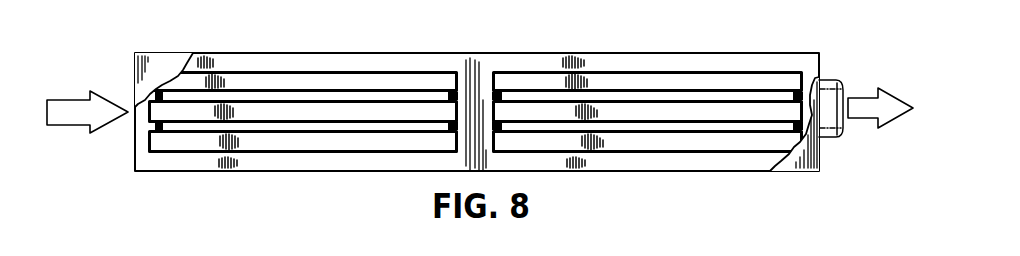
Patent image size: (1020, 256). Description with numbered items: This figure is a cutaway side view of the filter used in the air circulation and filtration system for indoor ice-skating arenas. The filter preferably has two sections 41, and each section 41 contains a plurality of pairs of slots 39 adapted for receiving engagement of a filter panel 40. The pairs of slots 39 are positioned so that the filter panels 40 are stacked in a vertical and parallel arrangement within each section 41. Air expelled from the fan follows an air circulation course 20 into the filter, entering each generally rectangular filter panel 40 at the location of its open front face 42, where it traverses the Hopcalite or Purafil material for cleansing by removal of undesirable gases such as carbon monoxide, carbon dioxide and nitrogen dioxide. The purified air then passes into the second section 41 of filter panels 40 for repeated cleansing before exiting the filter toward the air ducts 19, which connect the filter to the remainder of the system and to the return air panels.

The air duct 19 is at (828, 88).
The air circulation course 20 is at (76, 100).
The pairs of slots 39 is at (454, 143).
The filter panel 40 is at (293, 82).
The section 41 is at (365, 53).
The open front face 42 is at (135, 142).